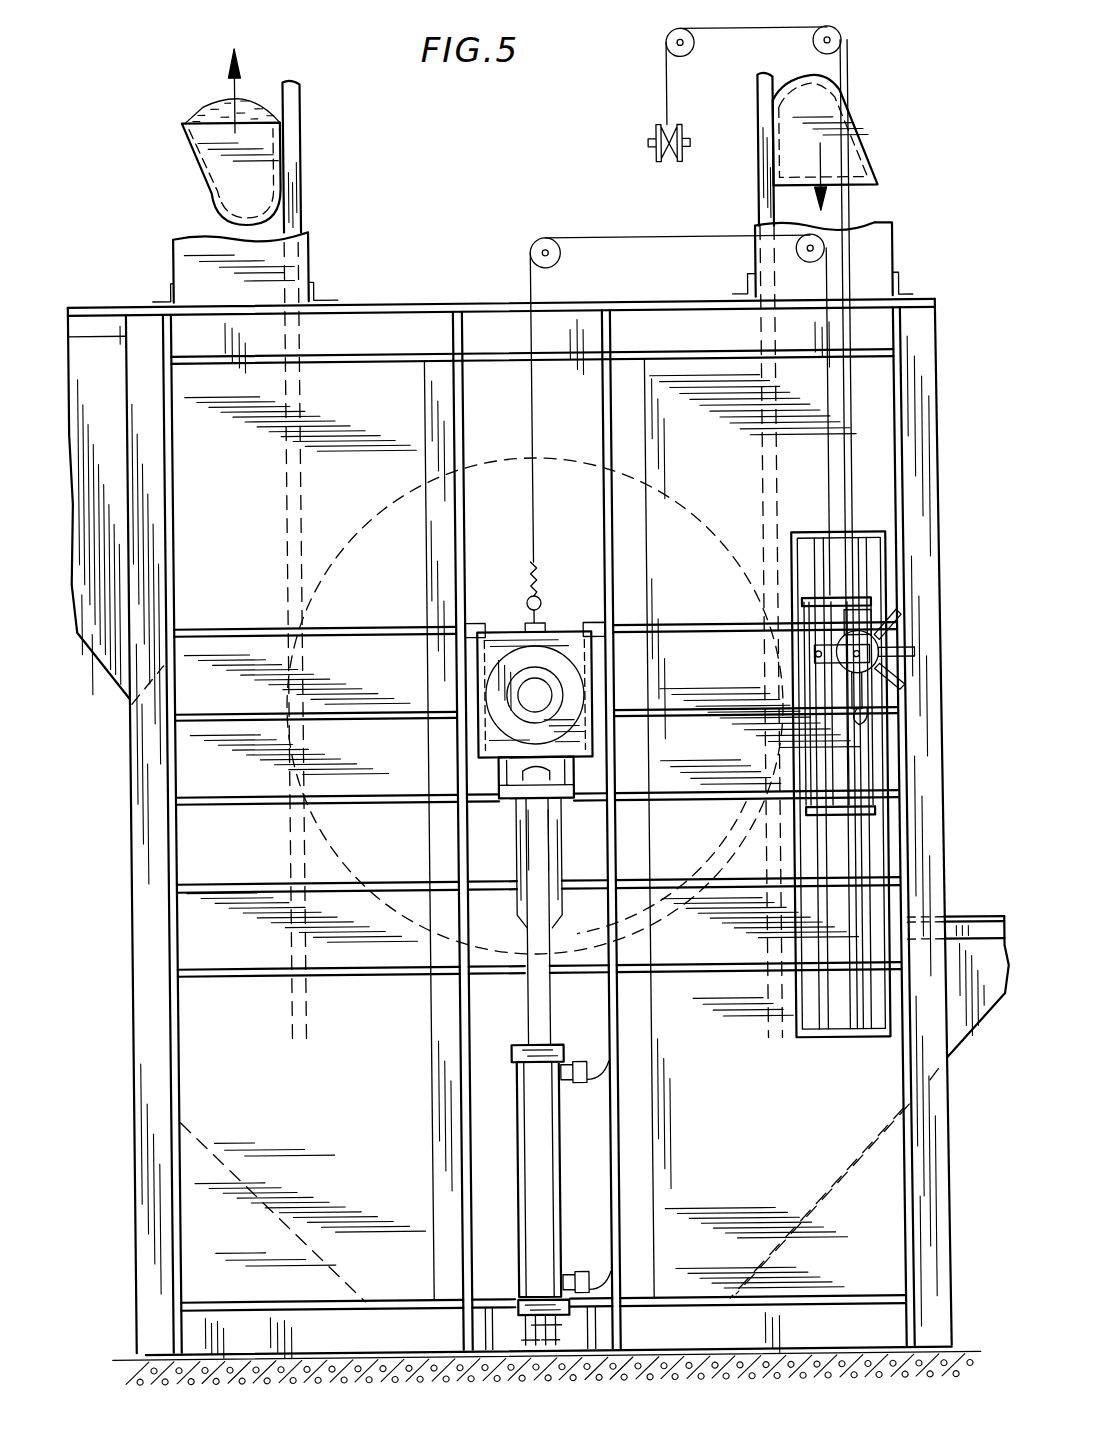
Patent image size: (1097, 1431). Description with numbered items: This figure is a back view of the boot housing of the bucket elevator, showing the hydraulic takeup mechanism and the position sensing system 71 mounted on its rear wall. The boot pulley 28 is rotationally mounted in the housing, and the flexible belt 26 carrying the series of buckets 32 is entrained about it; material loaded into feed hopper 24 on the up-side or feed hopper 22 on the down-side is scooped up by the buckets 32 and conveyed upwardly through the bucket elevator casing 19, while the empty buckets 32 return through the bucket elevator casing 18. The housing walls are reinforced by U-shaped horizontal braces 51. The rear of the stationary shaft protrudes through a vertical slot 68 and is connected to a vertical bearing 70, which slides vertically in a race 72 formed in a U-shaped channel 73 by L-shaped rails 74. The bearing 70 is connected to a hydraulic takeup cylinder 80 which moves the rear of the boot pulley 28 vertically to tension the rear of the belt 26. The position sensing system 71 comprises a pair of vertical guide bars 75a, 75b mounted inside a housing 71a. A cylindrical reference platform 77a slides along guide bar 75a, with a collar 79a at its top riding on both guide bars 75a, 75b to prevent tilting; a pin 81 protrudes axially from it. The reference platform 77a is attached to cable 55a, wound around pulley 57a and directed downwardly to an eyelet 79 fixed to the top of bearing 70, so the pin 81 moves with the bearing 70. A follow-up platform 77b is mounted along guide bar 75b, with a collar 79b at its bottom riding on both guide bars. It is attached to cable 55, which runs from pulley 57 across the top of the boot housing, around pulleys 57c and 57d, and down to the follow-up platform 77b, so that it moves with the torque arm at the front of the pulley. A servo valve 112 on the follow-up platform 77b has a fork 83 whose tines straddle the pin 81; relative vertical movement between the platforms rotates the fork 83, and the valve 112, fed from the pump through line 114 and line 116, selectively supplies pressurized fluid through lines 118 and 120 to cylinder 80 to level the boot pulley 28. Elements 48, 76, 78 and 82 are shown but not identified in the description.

The bucket elevator casing 18 is at (892, 251).
The bucket elevator casing 19 is at (178, 272).
The feed hopper 22 is at (985, 1040).
The feed hopper 24 is at (92, 391).
The flexible belt 26 is at (308, 212).
The boot pulley 28 is at (372, 540).
The buckets 32 is at (218, 194).
The diagonal brace 48 is at (288, 1235).
The U-shaped horizontal braces 51 is at (800, 1352).
The cable 55 is at (762, 28).
The cable 55a is at (642, 237).
The pulley 57 is at (662, 128).
The pulley 57a is at (550, 238).
The pulley 57c is at (674, 36).
The pulley 57d is at (849, 45).
The vertical slot 68 is at (520, 905).
The vertical bearing 70 is at (498, 640).
The position sensing system 71 is at (800, 990).
The housing 71a is at (796, 930).
The race 72 is at (478, 628).
The U-shaped channel 73 is at (511, 423).
The L-shaped rails 74 is at (427, 398).
The vertical guide bar 75a is at (824, 1034).
The vertical guide bar 75b is at (866, 1034).
The column 76 is at (898, 386).
The cylindrical reference platform 77a is at (808, 776).
The follow-up platform 77b is at (870, 762).
The cross beam 78 is at (216, 628).
The eyelet 79 is at (543, 600).
The collar 79a is at (840, 598).
The collar 79b is at (822, 820).
The hydraulic takeup cylinder 80 is at (556, 1160).
The pin 81 is at (816, 657).
The piston rod 82 is at (550, 1022).
The fork 83 is at (840, 663).
The servo valve 112 is at (606, 1284).
The line 114 is at (918, 653).
The hydraulic line 116 is at (870, 722).
The line 118 is at (606, 1076).
The line 120 is at (905, 684).